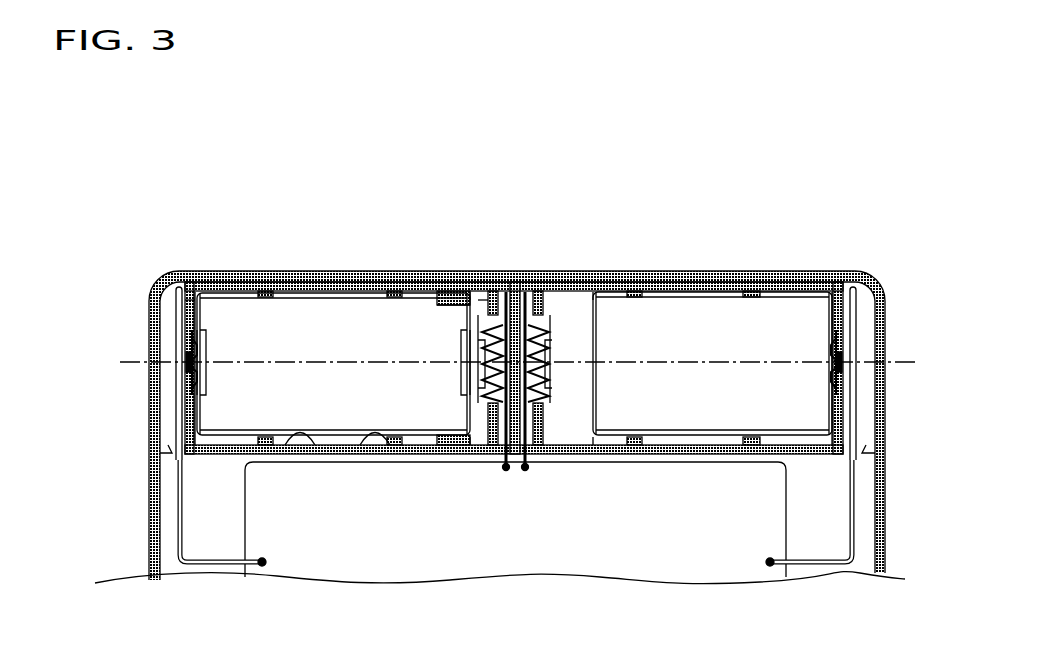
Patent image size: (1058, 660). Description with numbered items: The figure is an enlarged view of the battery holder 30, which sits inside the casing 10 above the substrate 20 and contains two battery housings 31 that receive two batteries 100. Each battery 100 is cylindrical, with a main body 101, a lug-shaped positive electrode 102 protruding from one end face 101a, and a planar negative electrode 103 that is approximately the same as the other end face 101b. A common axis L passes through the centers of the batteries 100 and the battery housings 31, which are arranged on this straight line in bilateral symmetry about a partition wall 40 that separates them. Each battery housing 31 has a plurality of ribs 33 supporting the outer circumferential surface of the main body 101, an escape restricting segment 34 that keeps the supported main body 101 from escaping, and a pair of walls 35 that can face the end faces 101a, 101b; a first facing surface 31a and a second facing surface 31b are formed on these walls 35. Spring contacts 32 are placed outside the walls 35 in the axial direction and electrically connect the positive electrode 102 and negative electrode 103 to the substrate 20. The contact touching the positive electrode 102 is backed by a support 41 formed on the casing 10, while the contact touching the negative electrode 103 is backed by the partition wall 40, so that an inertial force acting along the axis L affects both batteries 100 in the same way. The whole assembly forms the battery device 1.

The battery device 1 is at (490, 175).
The casing 10 is at (150, 305).
The substrate 20 is at (547, 557).
The battery holder 30 is at (401, 240).
The battery housings 31 is at (657, 272).
The first facing surface 31a is at (195, 298).
The second facing surface 31b is at (483, 300).
The spring contacts 32 is at (840, 340).
The ribs 33 is at (372, 420).
The escape restricting segment 34 is at (438, 312).
The pair of walls 35 is at (182, 322).
The partition wall 40 is at (518, 290).
The support 41 is at (177, 315).
The batteries 100 is at (690, 300).
The main body 101 is at (353, 288).
The one end face 101a is at (200, 405).
The other end face 101b is at (478, 400).
The positive electrode 102 is at (182, 368).
The negative electrode 103 is at (484, 440).
The common axis L is at (127, 362).